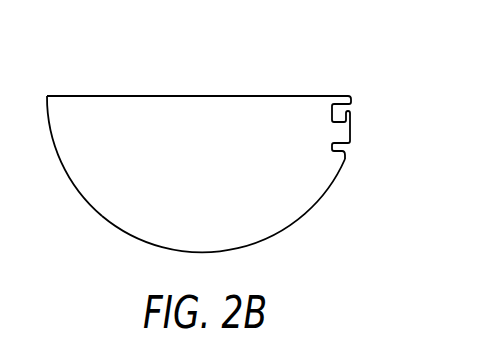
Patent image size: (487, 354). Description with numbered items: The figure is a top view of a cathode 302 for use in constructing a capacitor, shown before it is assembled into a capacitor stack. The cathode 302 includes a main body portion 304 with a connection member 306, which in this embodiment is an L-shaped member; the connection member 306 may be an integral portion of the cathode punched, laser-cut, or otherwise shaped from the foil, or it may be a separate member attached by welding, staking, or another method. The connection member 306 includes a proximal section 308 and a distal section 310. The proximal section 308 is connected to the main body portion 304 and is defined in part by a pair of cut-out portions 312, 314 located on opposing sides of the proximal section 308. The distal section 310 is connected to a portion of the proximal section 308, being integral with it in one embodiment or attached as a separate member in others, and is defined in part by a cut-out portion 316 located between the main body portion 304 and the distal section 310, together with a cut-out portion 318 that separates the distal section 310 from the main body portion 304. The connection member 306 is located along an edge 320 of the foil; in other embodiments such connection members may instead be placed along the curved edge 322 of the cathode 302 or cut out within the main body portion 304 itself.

The cathode 302 is at (118, 50).
The main body portion 304 is at (224, 229).
The connection member 306 is at (352, 117).
The proximal section 308 is at (340, 124).
The distal section 310 is at (348, 142).
The cut-out portion 312 is at (345, 147).
The cut-out portion 314 is at (337, 108).
The cut-out portion 316 is at (350, 99).
The cut-out portion 318 is at (352, 110).
The edge 320 is at (228, 95).
The curved edge 322 is at (91, 205).